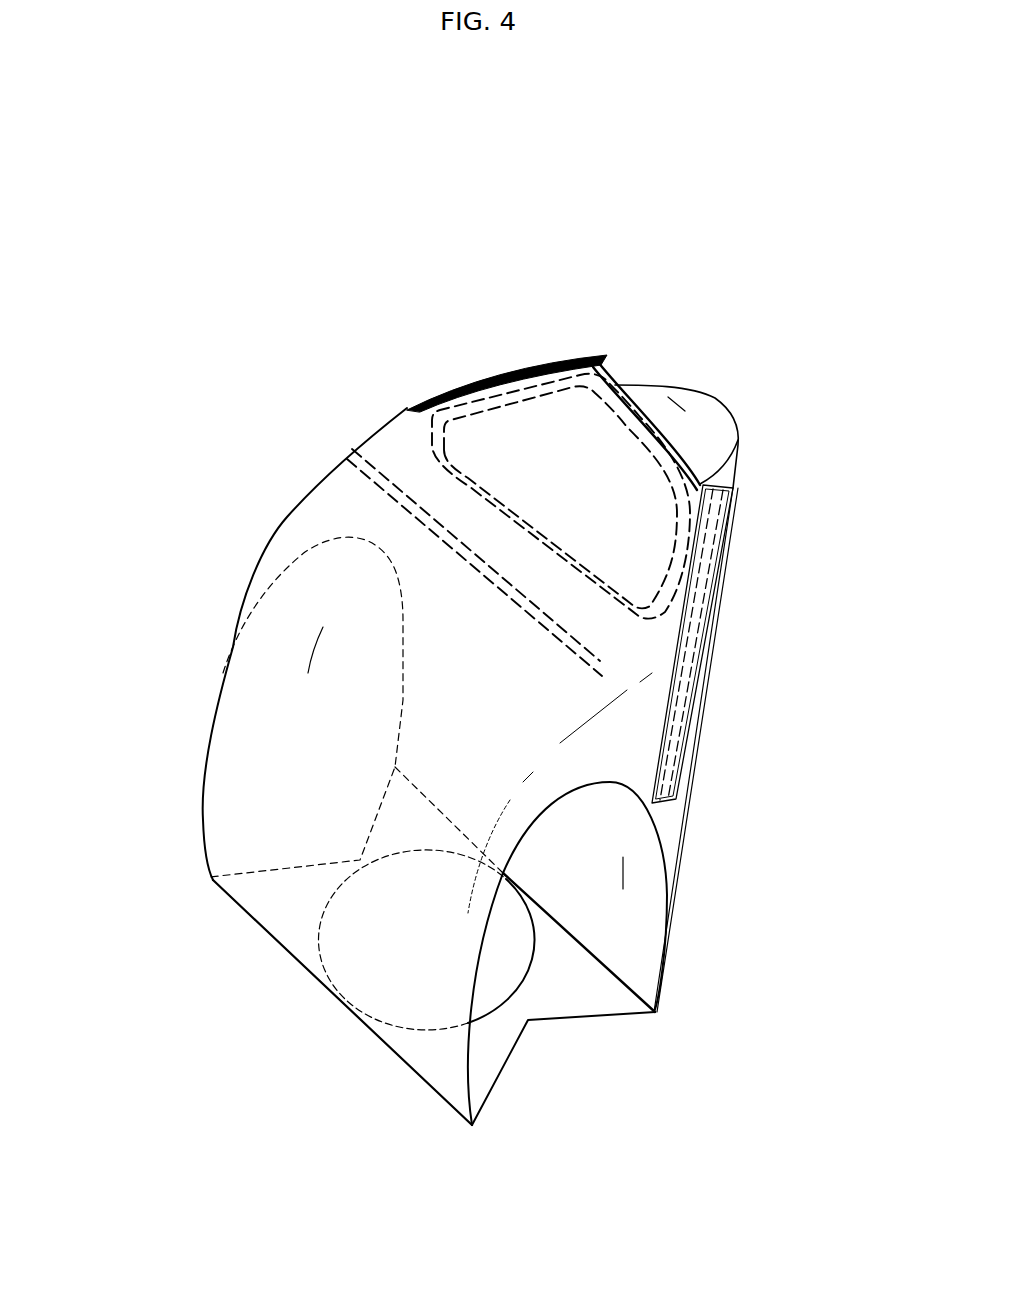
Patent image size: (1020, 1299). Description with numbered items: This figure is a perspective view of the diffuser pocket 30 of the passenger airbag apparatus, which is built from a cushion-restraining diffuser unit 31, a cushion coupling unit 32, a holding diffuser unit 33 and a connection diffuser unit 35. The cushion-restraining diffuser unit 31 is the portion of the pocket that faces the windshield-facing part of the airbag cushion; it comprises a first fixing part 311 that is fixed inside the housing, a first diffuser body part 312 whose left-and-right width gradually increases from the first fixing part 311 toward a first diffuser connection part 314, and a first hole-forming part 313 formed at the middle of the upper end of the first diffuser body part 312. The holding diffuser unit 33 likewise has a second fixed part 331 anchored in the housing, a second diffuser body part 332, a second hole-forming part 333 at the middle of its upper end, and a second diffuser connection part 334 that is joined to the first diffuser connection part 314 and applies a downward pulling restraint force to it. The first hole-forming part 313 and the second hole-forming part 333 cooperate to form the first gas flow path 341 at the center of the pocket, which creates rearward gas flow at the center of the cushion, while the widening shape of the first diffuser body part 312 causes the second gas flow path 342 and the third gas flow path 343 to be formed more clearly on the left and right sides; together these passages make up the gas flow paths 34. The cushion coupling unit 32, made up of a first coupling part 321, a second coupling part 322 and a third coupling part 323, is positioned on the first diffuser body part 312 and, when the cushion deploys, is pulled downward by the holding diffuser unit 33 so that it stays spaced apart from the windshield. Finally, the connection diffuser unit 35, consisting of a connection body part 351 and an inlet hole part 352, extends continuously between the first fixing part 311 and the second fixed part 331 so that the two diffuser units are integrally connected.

The diffuser pocket 30 is at (188, 197).
The cushion-restraining diffuser unit 31 is at (376, 687).
The first fixing part 311 is at (293, 958).
The first diffuser body part 312 is at (247, 800).
The first hole-forming part 313 is at (646, 402).
The first diffuser connection part 314 is at (650, 510).
The cushion coupling unit 32 is at (507, 543).
The first coupling part 321 is at (663, 430).
The second coupling part 322 is at (488, 396).
The third coupling part 323 is at (467, 487).
The holding diffuser unit 33 is at (654, 727).
The second fixed part 331 is at (592, 955).
The second diffuser body part 332 is at (670, 842).
The second hole-forming part 333 is at (727, 405).
The second diffuser connection part 334 is at (603, 355).
The sewing part 34 is at (472, 599).
The first gas flow path 341 is at (678, 403).
The second gas flow path 342 is at (625, 873).
The third gas flow path 343 is at (313, 648).
The connection diffuser unit 35 is at (386, 992).
The connection body part 351 is at (497, 1042).
The inlet hole part 352 is at (497, 954).